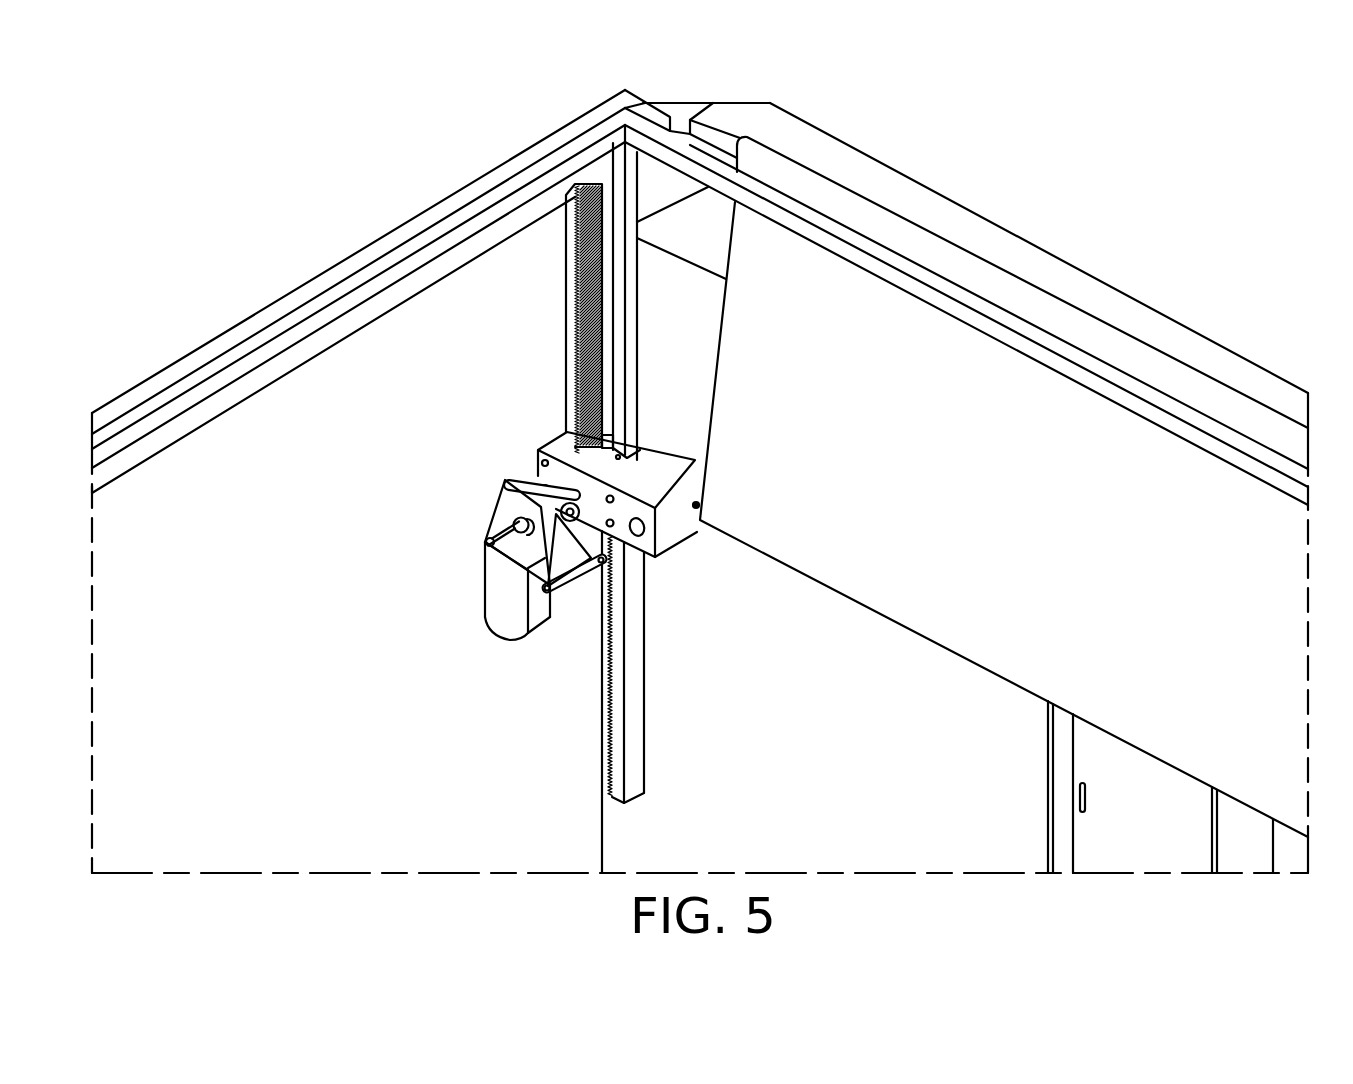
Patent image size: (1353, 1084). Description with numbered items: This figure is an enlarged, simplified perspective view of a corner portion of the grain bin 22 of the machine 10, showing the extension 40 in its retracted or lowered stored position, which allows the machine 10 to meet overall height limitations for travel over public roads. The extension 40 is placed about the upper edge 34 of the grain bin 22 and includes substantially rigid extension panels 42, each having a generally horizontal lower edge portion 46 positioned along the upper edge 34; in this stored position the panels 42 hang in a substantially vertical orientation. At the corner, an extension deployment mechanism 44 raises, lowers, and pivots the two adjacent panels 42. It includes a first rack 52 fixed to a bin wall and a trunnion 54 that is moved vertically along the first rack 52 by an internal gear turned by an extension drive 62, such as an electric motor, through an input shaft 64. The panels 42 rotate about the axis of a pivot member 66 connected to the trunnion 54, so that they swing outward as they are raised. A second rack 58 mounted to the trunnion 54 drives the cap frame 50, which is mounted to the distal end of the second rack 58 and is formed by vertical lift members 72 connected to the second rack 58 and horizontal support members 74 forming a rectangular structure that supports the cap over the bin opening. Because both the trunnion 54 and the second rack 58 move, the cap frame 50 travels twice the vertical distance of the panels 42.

The machine 10 is at (444, 158).
The grain bin 22 is at (1160, 312).
The upper edge 34 is at (1037, 245).
The extension 40 is at (893, 130).
The extension panels 42 is at (941, 236).
The extension deployment mechanism 44 is at (725, 605).
The lower edge portion 46 is at (927, 640).
The cap frame 50 is at (424, 234).
The first rack 52 is at (566, 318).
The trunnion 54 is at (667, 438).
The second rack 58 is at (609, 708).
The extension drive 62 is at (493, 630).
The input shaft 64 is at (568, 504).
The pivot member 66 is at (693, 513).
The vertical lift members 72 is at (640, 304).
The horizontal support members 74 is at (316, 294).